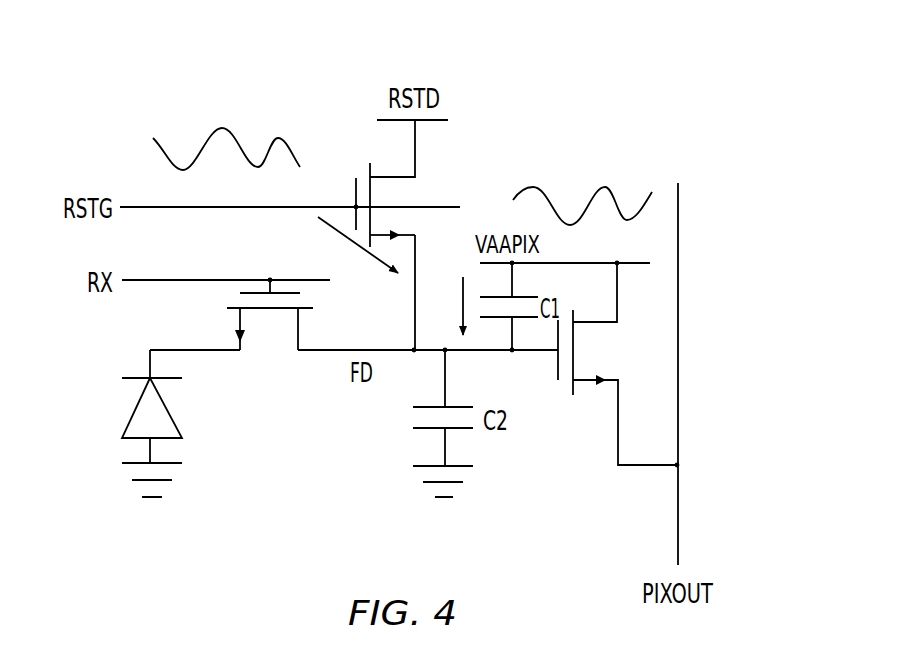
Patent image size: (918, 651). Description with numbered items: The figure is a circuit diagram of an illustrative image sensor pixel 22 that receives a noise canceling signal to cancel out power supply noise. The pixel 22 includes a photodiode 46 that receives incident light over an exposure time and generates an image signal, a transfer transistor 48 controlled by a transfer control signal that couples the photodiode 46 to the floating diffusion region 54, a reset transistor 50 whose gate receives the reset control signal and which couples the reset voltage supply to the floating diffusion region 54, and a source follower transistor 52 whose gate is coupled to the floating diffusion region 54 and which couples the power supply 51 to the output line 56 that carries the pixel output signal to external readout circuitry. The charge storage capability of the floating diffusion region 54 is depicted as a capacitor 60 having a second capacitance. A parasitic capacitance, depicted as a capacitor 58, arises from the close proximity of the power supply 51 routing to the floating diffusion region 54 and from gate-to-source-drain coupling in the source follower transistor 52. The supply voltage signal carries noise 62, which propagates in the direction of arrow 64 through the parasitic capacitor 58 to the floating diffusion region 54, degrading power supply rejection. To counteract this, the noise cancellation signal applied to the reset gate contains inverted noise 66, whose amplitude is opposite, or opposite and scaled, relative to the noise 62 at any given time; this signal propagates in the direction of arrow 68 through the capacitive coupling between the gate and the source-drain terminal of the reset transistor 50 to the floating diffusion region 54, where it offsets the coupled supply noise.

The image sensor pixel 22 is at (578, 100).
The photodiode 46 is at (133, 413).
The transfer transistor 48 is at (275, 310).
The reset transistor 50 is at (372, 207).
The power supply 51 is at (617, 263).
The source follower transistor 52 is at (598, 323).
The floating diffusion region 54 is at (413, 352).
The output line 56 is at (680, 195).
The capacitor 58 is at (530, 295).
The capacitor 60 is at (428, 430).
The noise 62 is at (605, 188).
The arrow 64 is at (462, 297).
The inverted noise 66 is at (220, 130).
The arrow 68 is at (337, 228).